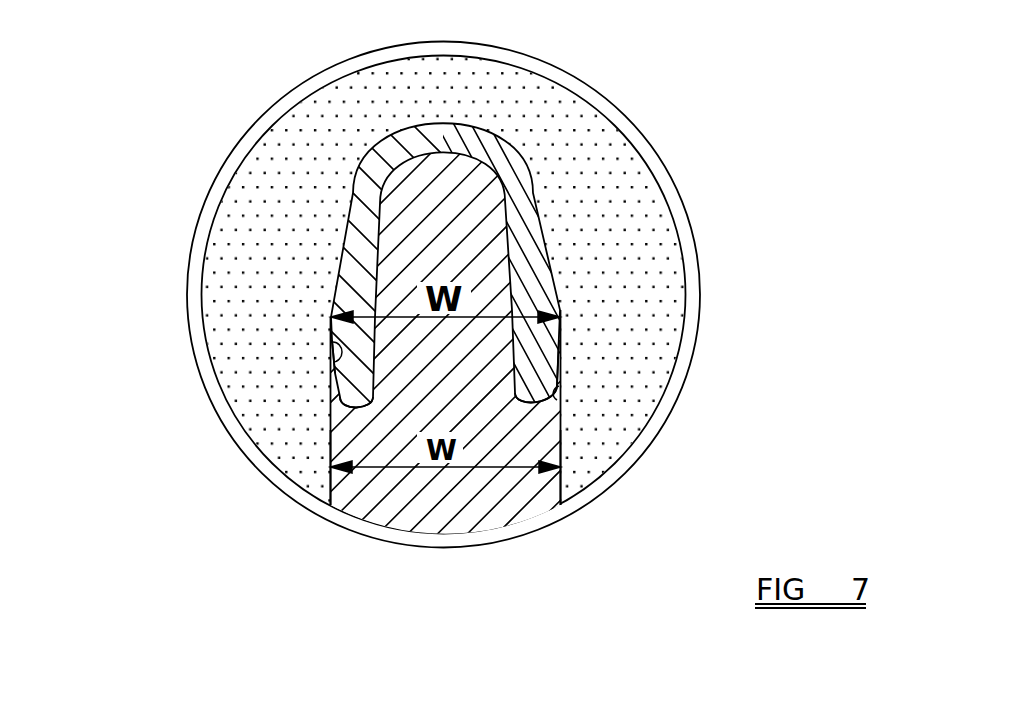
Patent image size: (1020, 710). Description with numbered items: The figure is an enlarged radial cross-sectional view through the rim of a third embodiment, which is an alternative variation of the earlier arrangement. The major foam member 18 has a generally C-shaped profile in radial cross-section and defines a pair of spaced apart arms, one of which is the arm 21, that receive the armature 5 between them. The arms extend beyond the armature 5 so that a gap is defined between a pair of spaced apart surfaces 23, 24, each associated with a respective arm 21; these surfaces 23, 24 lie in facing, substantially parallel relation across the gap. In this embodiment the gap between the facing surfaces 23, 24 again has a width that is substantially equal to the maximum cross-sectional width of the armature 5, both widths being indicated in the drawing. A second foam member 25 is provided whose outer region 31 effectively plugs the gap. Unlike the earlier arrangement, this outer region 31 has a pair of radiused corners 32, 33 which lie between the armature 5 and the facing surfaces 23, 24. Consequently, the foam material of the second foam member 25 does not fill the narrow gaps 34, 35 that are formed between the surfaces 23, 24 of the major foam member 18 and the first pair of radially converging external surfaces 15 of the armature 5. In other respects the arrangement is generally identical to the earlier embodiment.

The armature 5 is at (470, 180).
The foam member 18 is at (633, 195).
The first pair of radially converging external surfaces 15 is at (330, 342).
The narrow gap 34 is at (330, 371).
The narrow gap 35 is at (562, 375).
The radiused corner 32 is at (330, 387).
The radiused corner 33 is at (562, 392).
The arm 21 is at (305, 460).
The surface 23 is at (333, 487).
The surface 24 is at (557, 490).
The second foam member 25 is at (497, 530).
The outer region 31 is at (440, 493).